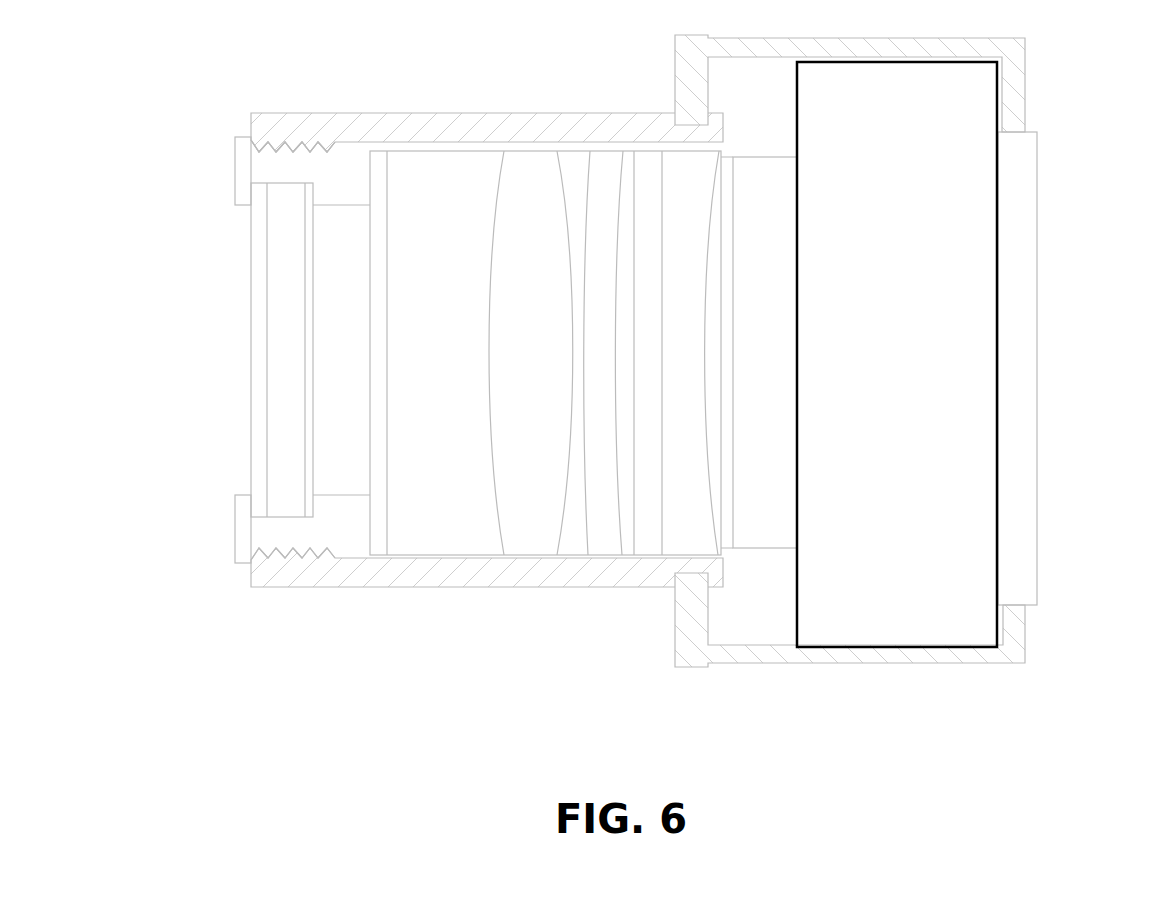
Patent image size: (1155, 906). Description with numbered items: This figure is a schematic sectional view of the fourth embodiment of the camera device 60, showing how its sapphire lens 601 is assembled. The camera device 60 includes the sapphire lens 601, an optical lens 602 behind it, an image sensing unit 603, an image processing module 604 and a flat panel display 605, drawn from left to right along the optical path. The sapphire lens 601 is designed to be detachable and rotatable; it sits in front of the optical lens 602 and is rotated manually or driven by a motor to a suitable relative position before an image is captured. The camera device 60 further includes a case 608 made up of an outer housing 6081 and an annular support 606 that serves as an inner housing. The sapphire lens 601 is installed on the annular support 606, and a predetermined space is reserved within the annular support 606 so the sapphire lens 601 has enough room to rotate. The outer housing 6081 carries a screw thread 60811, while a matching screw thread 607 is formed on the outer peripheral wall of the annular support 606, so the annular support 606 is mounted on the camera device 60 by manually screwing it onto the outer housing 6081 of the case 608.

The camera device 60 is at (634, 368).
The sapphire lens 601 is at (250, 350).
The optical lens 602 is at (371, 354).
The image sensing unit 603 is at (742, 157).
The image processing module 604 is at (796, 603).
The flat panel display 605 is at (1037, 518).
The annular support 606 is at (345, 180).
The screw thread 607 is at (273, 150).
The case 608 is at (502, 50).
The outer housing 6081 is at (433, 182).
The screw thread 60811 is at (273, 150).